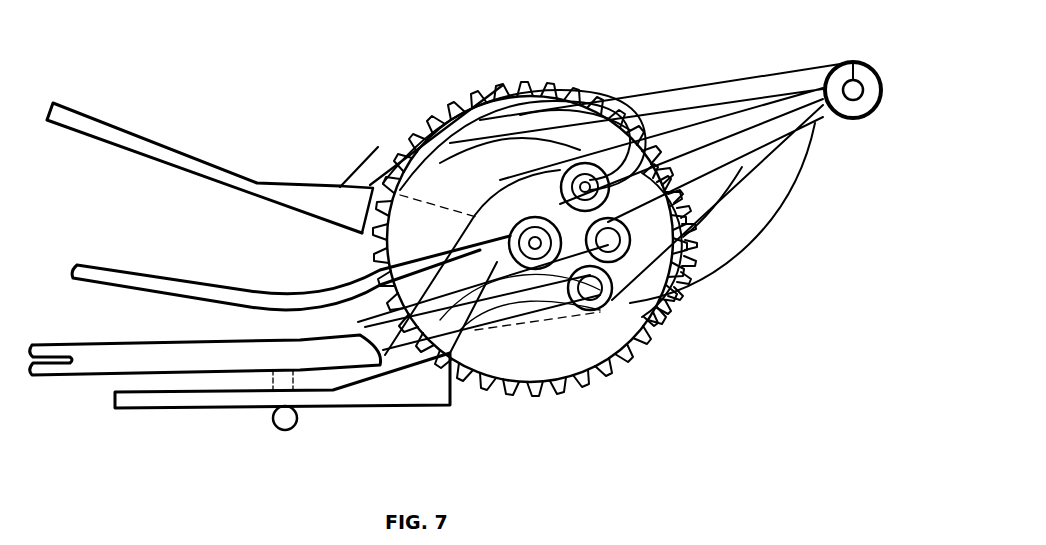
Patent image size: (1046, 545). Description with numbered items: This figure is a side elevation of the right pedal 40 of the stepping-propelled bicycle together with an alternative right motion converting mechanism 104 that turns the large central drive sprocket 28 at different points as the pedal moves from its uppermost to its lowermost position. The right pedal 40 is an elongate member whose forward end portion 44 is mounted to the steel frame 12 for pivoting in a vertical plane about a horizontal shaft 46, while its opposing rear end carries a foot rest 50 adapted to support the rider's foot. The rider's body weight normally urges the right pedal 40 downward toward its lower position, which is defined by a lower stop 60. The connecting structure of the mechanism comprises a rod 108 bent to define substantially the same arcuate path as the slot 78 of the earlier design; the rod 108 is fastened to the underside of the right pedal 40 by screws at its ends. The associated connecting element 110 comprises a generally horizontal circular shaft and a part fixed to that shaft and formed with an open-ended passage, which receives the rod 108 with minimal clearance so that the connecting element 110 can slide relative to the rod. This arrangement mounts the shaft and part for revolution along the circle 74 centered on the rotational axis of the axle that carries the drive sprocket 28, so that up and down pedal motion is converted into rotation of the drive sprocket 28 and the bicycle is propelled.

The frame 12 is at (92, 347).
The drive sprocket 28 is at (597, 345).
The right pedal 40 is at (283, 140).
The forward end portion 44 is at (707, 87).
The horizontal shaft 46 is at (847, 68).
The foot rest 50 is at (118, 124).
The lower stop 60 is at (293, 425).
The circle 74 is at (370, 160).
The slot 78 is at (493, 163).
The right motion converting mechanism 104 is at (668, 270).
The rod 108 is at (440, 163).
The connecting element 110 is at (577, 160).